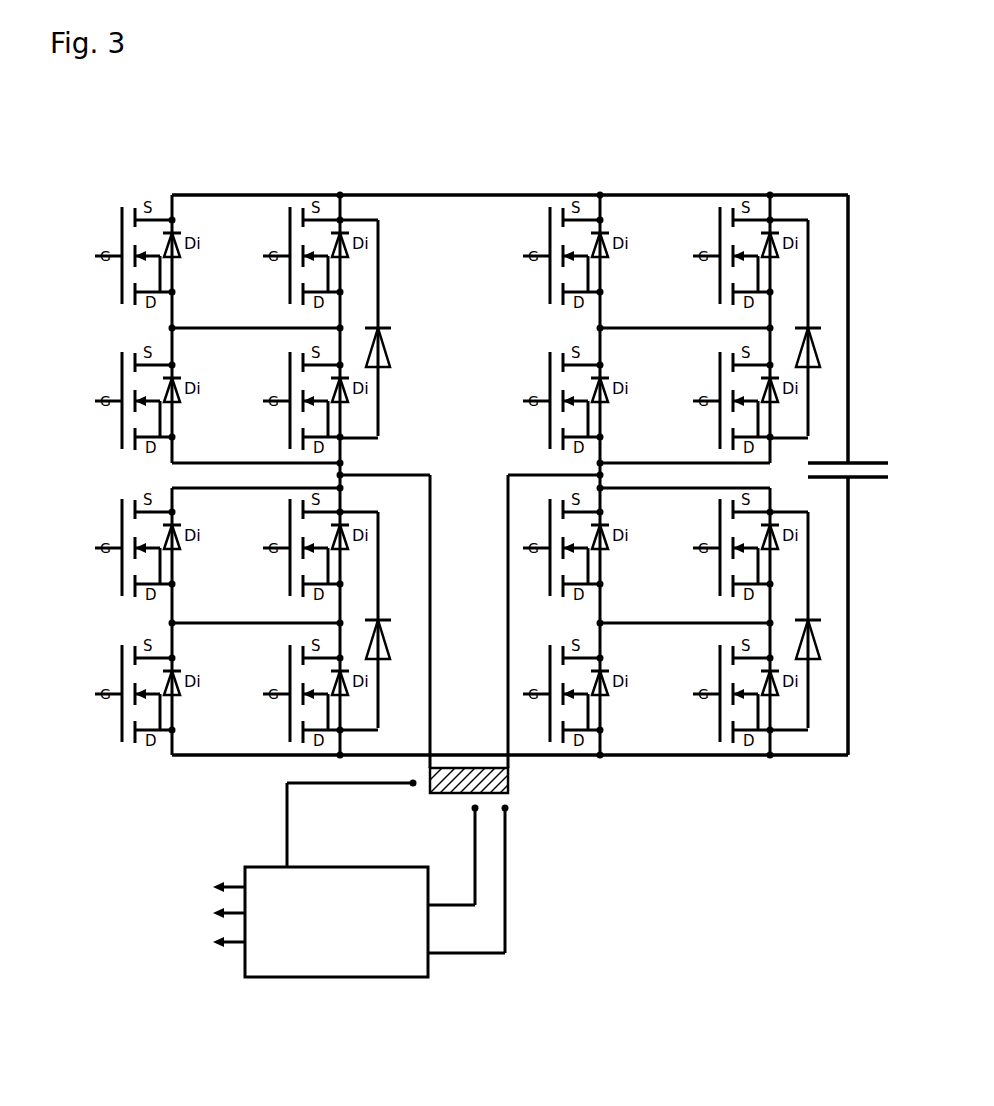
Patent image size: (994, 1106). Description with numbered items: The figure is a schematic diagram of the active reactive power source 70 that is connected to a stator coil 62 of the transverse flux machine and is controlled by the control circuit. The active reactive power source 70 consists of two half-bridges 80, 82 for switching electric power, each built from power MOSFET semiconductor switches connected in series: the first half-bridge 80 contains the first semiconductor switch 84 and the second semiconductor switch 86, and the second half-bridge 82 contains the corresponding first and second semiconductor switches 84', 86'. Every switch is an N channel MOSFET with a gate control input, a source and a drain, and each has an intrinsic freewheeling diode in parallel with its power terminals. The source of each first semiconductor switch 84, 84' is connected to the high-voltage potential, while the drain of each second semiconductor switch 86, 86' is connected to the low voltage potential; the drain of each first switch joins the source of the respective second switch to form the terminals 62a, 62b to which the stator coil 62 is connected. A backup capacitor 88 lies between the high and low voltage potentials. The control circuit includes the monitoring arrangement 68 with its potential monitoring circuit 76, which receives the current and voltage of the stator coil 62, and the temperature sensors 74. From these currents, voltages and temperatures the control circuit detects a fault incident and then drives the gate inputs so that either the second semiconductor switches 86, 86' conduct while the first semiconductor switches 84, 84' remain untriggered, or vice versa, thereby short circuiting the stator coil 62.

The active reactive power source 70 is at (496, 152).
The half-bridge 80 is at (268, 162).
The half-bridge 82 is at (647, 165).
The first semiconductor switch 84 is at (243, 340).
The first semiconductor switch 84' is at (672, 340).
The second semiconductor switch 86 is at (243, 622).
The second semiconductor switch 86' is at (672, 622).
The backup capacitor 88 is at (849, 475).
The stator coil 62 is at (494, 788).
The terminal for the stator coil 62a is at (384, 610).
The terminal for the stator coil 62b is at (553, 610).
The temperature sensors 74 is at (357, 824).
The monitoring arrangement 68 is at (336, 935).
The potential monitoring circuit 76 is at (347, 883).